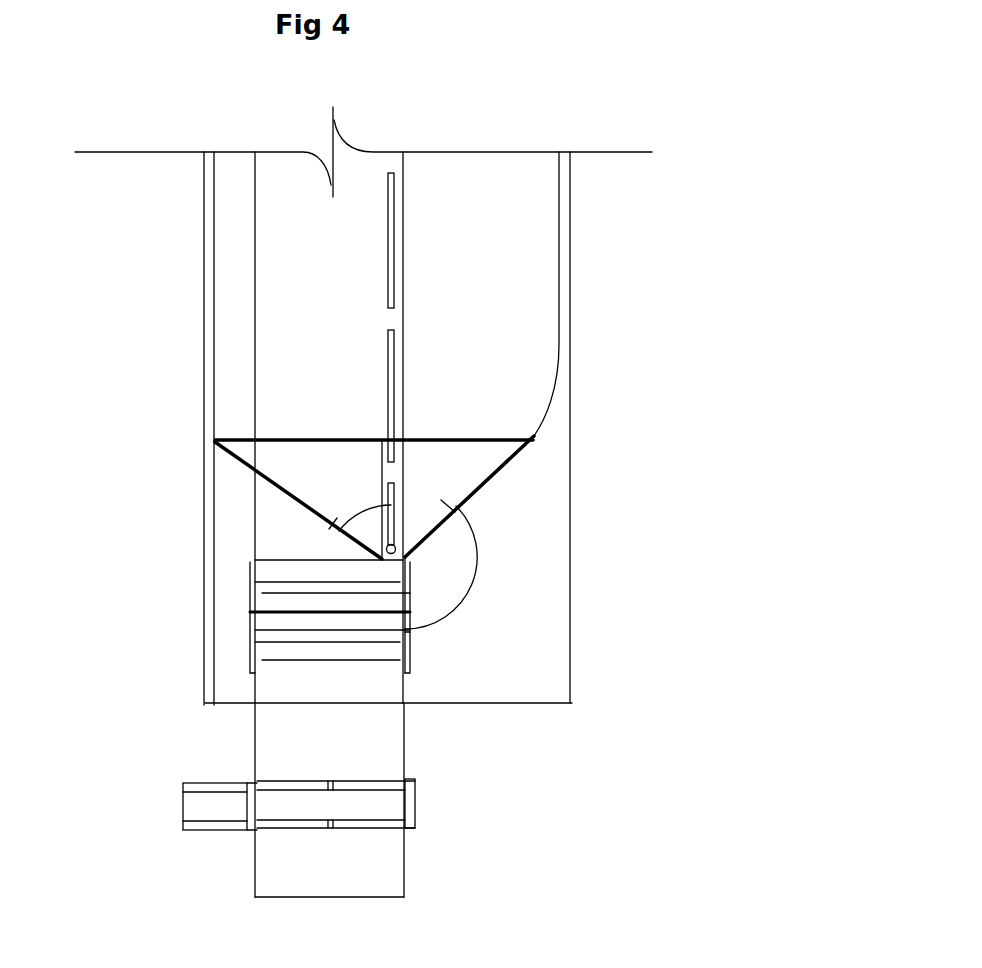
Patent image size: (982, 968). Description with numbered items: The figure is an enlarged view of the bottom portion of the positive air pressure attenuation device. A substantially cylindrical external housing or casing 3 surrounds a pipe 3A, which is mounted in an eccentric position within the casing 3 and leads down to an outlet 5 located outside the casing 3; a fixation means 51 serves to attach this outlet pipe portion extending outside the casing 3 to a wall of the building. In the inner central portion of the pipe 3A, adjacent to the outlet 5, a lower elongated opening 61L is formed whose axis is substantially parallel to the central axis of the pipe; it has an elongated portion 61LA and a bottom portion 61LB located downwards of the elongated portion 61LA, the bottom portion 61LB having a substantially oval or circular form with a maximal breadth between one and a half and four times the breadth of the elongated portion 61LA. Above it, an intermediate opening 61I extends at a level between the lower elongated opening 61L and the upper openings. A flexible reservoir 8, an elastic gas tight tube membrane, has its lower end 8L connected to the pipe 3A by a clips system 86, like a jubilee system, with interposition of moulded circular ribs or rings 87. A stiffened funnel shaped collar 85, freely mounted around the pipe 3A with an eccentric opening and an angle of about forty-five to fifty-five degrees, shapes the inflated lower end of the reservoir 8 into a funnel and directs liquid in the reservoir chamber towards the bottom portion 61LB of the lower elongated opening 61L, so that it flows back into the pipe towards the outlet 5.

The external housing or casing 3 is at (214, 292).
The flexible reservoir 8 is at (559, 215).
The intermediate opening 61I is at (394, 367).
The lower elongated opening 61L is at (395, 523).
The elongated portion 61LA is at (385, 510).
The bottom portion 61LB is at (388, 546).
The lower end of the elastic flexible membrane 8L is at (255, 553).
The moulded ribs or rings 87 is at (250, 613).
The stiffened funnel shaped collar 85 is at (490, 475).
The clips system 86 is at (407, 632).
The outlet 5 is at (395, 898).
The pipe 3A is at (257, 844).
The fixation means 51 is at (200, 771).